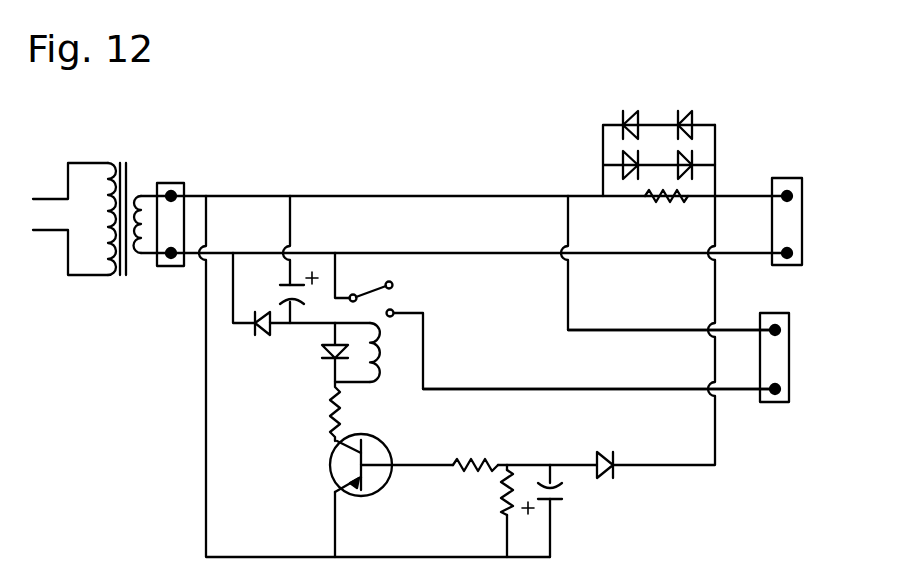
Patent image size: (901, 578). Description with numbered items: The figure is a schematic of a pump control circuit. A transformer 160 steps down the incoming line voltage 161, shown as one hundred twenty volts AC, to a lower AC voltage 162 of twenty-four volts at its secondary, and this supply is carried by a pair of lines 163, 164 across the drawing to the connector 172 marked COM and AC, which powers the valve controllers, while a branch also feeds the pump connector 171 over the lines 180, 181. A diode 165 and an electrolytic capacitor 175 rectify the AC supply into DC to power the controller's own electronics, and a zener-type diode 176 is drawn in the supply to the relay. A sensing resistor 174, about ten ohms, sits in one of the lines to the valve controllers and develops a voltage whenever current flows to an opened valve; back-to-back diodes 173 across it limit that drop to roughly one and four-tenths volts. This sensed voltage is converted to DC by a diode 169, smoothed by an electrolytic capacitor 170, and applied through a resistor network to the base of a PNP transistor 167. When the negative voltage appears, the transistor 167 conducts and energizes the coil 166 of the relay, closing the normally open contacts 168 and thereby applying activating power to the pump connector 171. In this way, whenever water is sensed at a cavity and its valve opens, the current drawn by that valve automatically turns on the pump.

The transformer 160 is at (116, 155).
The line voltage 161 is at (45, 197).
The lower AC voltage 162 is at (137, 258).
The first power line 163 is at (342, 194).
The second power line 164 is at (386, 251).
The diode 165 is at (265, 337).
The coil 166 is at (372, 383).
The PNP transistor 167 is at (378, 458).
The normally open contacts 168 is at (397, 301).
The diode 169 is at (597, 455).
The electrolytic capacitor 170 is at (560, 502).
The pump connector 171 is at (790, 392).
The connector 172 is at (785, 175).
The back-to-back diodes 173 is at (722, 173).
The sensing resistor 174 is at (667, 199).
The electrolytic capacitor 175 is at (273, 292).
The zener diode 176 is at (322, 357).
The pump line 180 is at (680, 328).
The pump line 181 is at (692, 388).